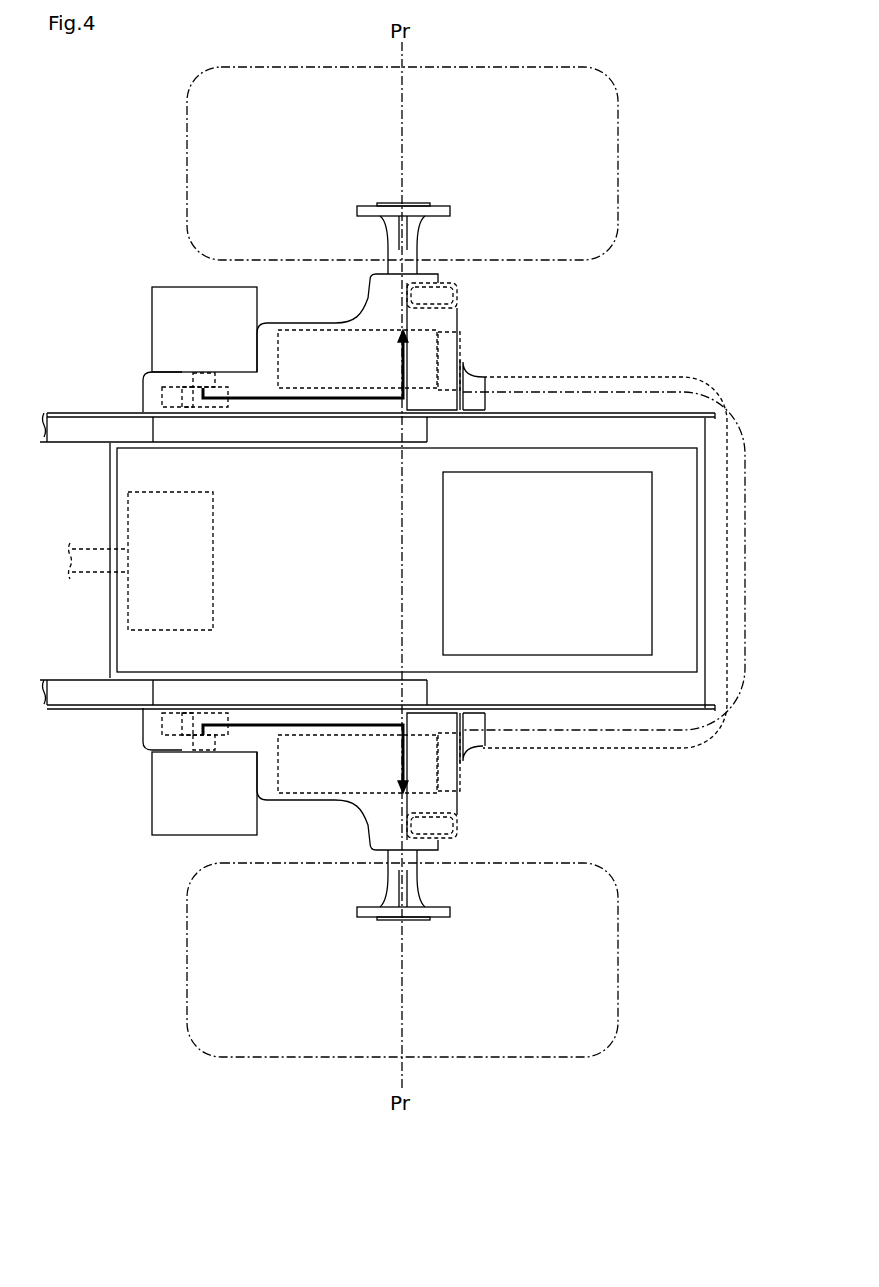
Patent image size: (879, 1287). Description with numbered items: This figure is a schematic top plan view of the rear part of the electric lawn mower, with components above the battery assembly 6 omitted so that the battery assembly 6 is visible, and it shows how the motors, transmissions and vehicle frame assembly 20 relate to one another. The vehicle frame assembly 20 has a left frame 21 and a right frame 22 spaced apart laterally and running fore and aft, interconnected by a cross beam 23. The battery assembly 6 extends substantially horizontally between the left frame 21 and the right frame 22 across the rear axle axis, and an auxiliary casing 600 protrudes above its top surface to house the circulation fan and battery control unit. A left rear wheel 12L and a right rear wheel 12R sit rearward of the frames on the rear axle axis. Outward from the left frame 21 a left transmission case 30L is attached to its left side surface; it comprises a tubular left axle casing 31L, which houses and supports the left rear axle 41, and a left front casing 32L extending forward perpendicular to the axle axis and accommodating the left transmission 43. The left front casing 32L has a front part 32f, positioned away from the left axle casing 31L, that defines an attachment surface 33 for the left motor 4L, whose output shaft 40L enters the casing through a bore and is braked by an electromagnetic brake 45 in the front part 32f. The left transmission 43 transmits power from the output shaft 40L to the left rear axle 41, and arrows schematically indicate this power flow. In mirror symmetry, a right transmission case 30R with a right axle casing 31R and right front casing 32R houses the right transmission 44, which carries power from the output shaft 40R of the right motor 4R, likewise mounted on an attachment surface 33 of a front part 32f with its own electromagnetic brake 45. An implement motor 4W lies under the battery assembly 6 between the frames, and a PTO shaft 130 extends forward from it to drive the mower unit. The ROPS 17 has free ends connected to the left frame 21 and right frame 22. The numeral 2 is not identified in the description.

The vehicle body frame 2 is at (60, 412).
The right motor 4R is at (163, 300).
The left motor 4L is at (155, 815).
The implement motor 4W is at (205, 568).
The battery assembly 6 is at (546, 448).
The right rear wheel 12R is at (618, 172).
The left rear wheel 12L is at (618, 956).
The rollover protection system (ROPS) 17 is at (459, 312).
The vehicle frame assembly 20 is at (60, 708).
The left frame 21 is at (80, 682).
The right frame 22 is at (70, 437).
The cross beam 23 is at (110, 527).
The right transmission case 30R is at (288, 323).
The left transmission case 30L is at (448, 790).
The right axle casing 31R is at (430, 288).
The left axle casing 31L is at (457, 805).
The right front casing 32R is at (336, 334).
The left front casing 32L is at (302, 800).
The front part 32f is at (143, 400).
The attachment surface 33 is at (182, 373).
The output shaft 40R is at (183, 380).
The output shaft 40L is at (193, 742).
The left rear axle 41 is at (415, 878).
The left transmission 43 is at (343, 793).
The right transmission 44 is at (323, 342).
The electromagnetic brake 45 is at (188, 414).
The PTO shaft 130 is at (100, 574).
The auxiliary casing 600 is at (452, 562).